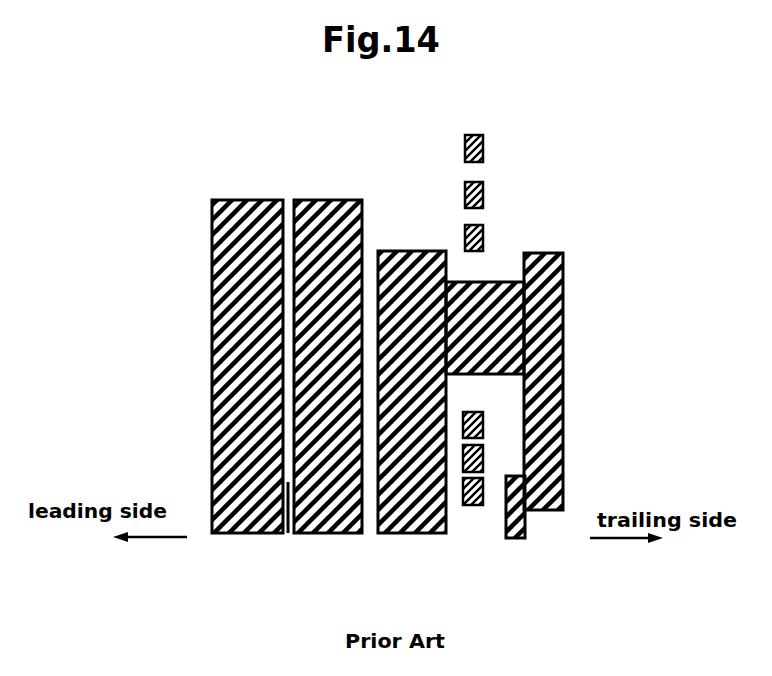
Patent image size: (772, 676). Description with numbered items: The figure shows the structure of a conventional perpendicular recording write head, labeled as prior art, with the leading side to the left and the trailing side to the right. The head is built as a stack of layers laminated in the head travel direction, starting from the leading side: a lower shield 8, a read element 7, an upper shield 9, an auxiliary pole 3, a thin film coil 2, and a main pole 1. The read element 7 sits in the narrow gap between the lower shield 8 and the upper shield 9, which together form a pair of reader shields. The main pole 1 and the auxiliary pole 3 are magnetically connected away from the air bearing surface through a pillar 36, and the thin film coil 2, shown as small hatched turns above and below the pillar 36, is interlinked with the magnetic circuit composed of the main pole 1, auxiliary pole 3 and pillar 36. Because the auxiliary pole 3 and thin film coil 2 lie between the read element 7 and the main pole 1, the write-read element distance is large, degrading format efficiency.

The main pole 1 is at (563, 450).
The thin film coil 2 is at (484, 158).
The auxiliary pole 3 is at (420, 250).
The pillar 36 is at (500, 281).
The read element 7 is at (288, 536).
The lower shield 8 is at (250, 198).
The upper shield 9 is at (328, 198).